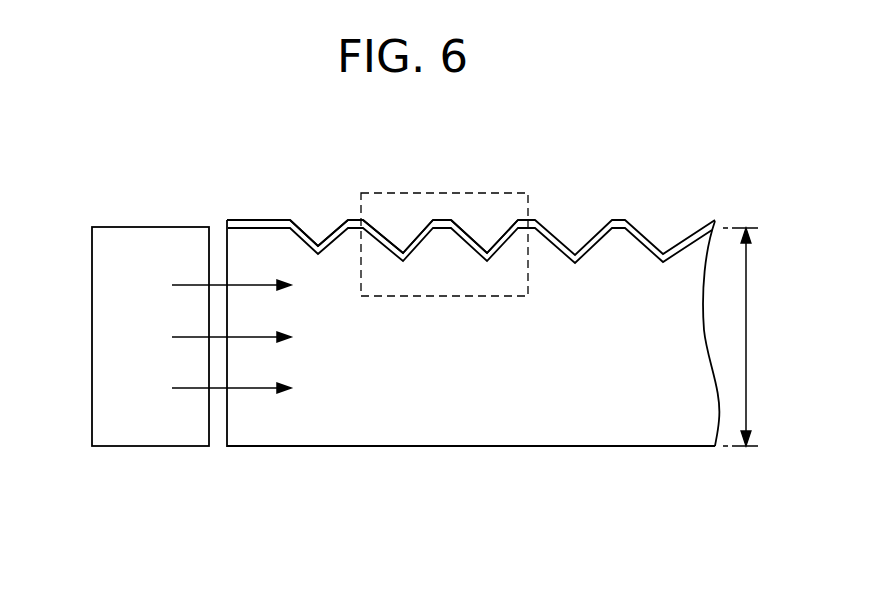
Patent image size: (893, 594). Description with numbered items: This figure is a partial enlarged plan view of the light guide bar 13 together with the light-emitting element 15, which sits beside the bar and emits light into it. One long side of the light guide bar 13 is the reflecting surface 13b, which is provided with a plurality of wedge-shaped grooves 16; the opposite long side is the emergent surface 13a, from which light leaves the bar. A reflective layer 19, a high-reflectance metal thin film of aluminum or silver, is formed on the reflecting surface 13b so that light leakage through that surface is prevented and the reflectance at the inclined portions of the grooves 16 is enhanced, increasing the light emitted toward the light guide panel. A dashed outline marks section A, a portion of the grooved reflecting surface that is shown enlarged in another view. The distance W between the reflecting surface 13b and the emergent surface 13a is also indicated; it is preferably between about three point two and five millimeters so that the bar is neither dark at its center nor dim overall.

The light guide bar 13 is at (365, 413).
The emergent surface 13a is at (532, 447).
The reflecting surface 13b is at (256, 218).
The light-emitting element 15 is at (147, 413).
The wedge-shaped grooves 16 is at (322, 232).
The reflective layer 19 is at (636, 229).
The section A is at (492, 193).
The distance W is at (750, 337).